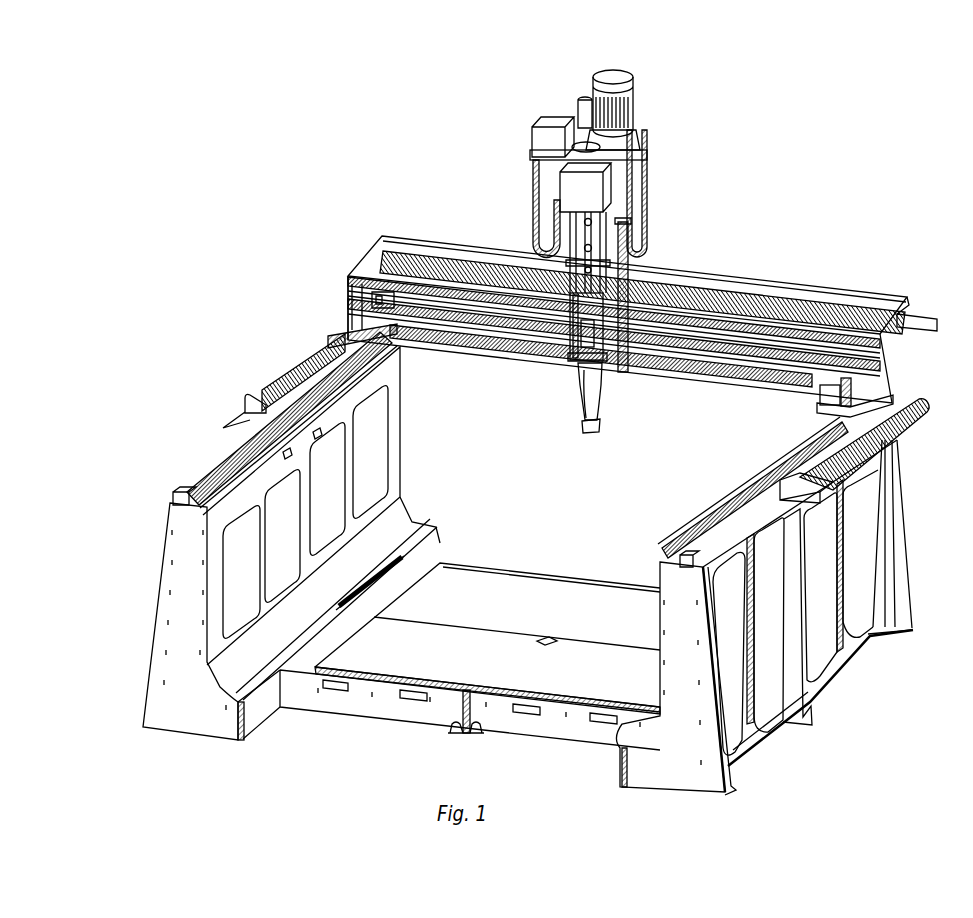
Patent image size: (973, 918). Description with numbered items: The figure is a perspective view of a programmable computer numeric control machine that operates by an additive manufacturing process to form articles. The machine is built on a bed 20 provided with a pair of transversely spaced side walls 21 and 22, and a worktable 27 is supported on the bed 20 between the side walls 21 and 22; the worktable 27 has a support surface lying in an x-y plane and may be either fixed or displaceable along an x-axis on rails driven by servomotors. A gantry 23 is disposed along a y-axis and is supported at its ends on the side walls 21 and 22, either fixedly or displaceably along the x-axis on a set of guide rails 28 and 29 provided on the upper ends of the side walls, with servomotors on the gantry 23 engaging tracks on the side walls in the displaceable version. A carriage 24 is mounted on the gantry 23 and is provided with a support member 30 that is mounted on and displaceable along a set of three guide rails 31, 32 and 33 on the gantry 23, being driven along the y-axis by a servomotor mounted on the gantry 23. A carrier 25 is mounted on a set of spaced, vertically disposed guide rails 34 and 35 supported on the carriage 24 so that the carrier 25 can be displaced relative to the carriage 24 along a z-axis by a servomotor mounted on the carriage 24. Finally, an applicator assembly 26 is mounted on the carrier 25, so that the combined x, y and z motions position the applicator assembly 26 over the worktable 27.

The bed 20 is at (388, 713).
The side wall 21 is at (162, 586).
The side wall 22 is at (896, 527).
The gantry 23 is at (817, 290).
The carriage 24 is at (659, 171).
The carrier 25 is at (557, 333).
The applicator assembly 26 is at (569, 389).
The worktable 27 is at (597, 583).
The guide rail 28 is at (245, 451).
The guide rail 29 is at (730, 497).
The support member 30 is at (652, 267).
The guide rail 31 is at (753, 327).
The guide rail 32 is at (717, 353).
The guide rail 33 is at (457, 337).
The guide rail 34 is at (573, 360).
The guide rail 35 is at (623, 368).